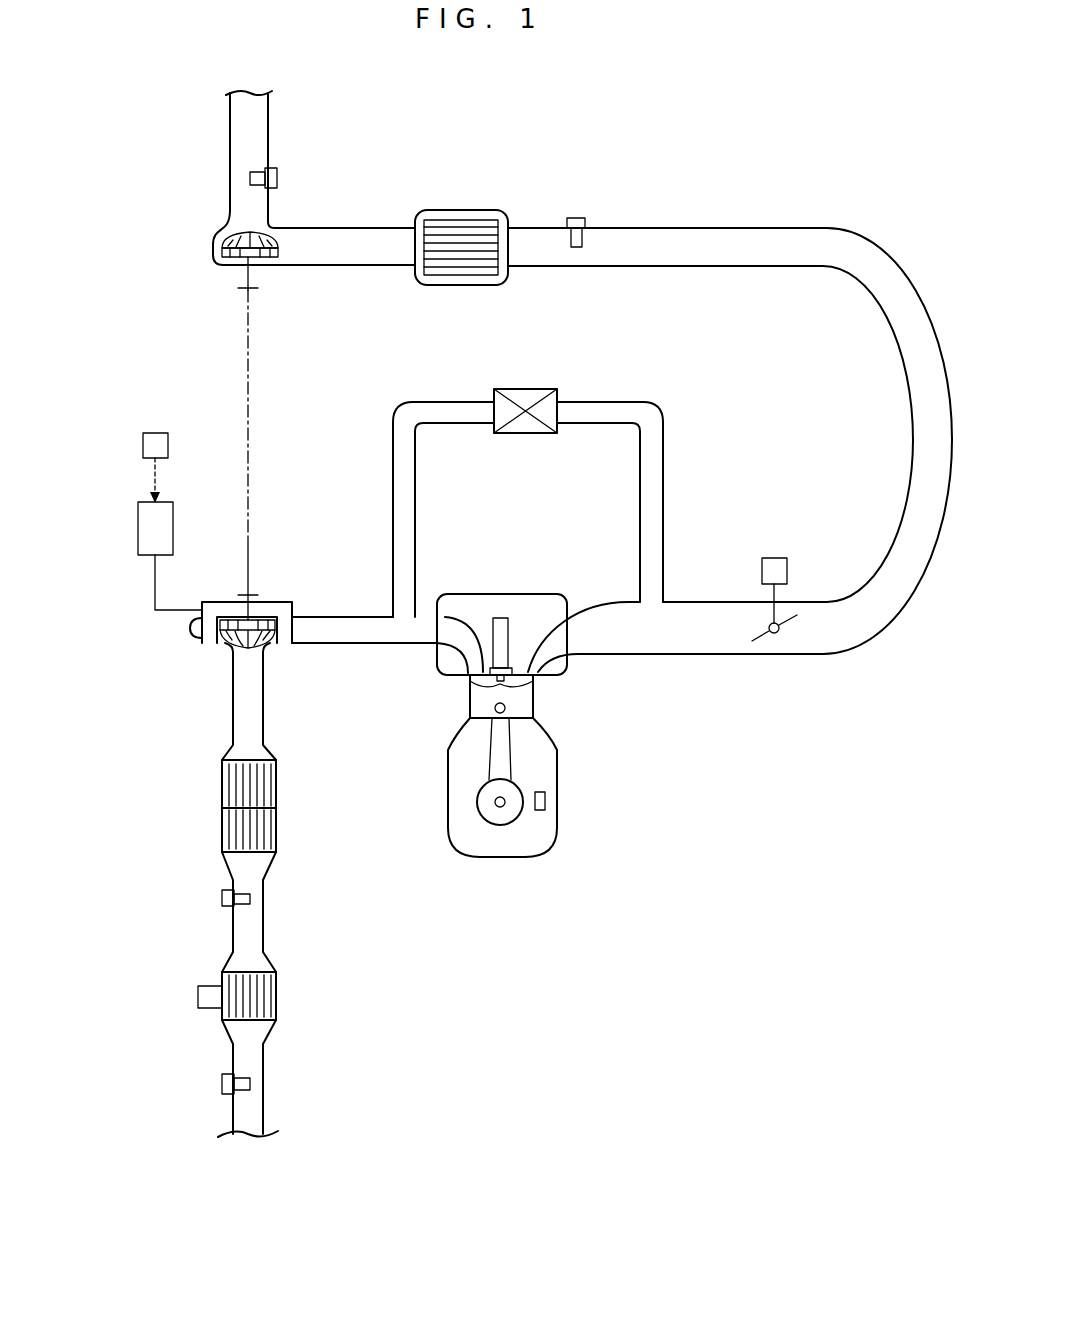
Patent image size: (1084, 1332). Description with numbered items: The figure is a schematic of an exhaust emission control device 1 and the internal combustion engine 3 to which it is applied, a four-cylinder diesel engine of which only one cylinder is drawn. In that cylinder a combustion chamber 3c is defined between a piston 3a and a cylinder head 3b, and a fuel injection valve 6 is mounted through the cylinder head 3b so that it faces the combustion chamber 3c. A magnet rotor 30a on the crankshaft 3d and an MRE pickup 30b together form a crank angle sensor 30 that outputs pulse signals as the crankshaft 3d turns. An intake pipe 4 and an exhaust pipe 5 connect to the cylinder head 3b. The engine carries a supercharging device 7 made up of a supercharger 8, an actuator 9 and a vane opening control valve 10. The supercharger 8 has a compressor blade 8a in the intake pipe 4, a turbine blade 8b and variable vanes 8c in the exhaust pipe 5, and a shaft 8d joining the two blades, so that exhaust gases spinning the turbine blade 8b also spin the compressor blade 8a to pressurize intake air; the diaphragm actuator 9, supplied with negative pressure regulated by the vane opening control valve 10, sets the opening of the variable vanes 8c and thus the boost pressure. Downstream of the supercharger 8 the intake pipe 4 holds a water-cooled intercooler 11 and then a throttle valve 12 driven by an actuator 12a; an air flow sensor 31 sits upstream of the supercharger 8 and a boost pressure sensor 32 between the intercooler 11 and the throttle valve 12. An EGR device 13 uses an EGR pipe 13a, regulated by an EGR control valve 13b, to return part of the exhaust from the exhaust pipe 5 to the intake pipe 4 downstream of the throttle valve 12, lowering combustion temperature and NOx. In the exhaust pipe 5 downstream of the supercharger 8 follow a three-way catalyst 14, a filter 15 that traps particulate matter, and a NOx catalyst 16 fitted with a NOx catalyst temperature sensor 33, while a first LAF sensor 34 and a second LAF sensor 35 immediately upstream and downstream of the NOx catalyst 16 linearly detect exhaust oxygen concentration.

The exhaust emission control device 1 is at (138, 1170).
The internal combustion engine 3 is at (470, 851).
The piston 3a is at (527, 707).
The cylinder head 3b is at (530, 608).
The combustion chamber 3c is at (525, 683).
The crankshaft 3d is at (504, 800).
The intake pipe 4 is at (230, 137).
The exhaust pipe 5 is at (353, 645).
The fuel injection valve 6 is at (500, 618).
The supercharging device 7 is at (88, 748).
The supercharger 8 is at (212, 224).
The compressor blade 8a is at (277, 252).
The turbine blade 8b is at (268, 645).
The variable vanes 8c is at (214, 640).
The shaft 8d is at (245, 402).
The actuator 9 is at (138, 530).
The vane opening control valve 10 is at (143, 445).
The intercooler 11 is at (468, 210).
The throttle valve 12 is at (788, 617).
The actuator 12a is at (782, 558).
The EGR device 13 is at (553, 346).
The EGR pipe 13a is at (393, 490).
The EGR control valve 13b is at (505, 433).
The three-way catalyst 14 is at (278, 780).
The filter 15 is at (278, 825).
The NOx catalyst 16 is at (278, 995).
The crank angle sensor 30 is at (583, 906).
The magnet rotor 30a is at (503, 827).
The MRE pickup 30b is at (540, 812).
The air flow sensor 31 is at (277, 176).
The boost pressure sensor 32 is at (578, 218).
The NOx catalyst temperature sensor 33 is at (198, 1000).
The first LAF sensor 34 is at (222, 900).
The second LAF sensor 35 is at (222, 1085).